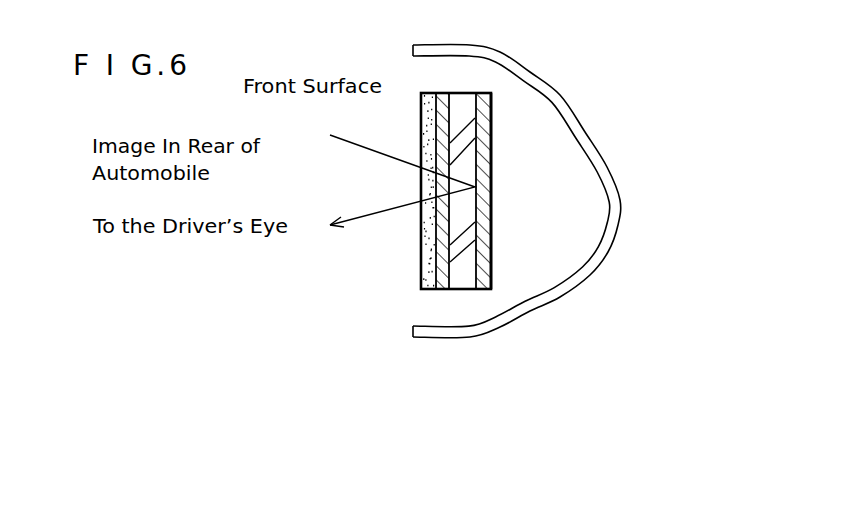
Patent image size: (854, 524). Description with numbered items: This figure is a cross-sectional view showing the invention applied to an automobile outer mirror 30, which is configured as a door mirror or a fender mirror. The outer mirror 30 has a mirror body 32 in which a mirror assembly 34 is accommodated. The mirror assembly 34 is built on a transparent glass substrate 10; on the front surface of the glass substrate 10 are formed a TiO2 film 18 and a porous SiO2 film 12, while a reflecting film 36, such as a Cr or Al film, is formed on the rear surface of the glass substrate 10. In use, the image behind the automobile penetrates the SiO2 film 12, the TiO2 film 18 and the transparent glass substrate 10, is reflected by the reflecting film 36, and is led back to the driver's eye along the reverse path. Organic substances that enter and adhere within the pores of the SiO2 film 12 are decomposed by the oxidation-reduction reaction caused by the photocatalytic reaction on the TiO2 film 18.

The automobile outer mirror 30 is at (610, 47).
The mirror body 32 is at (572, 100).
The transparent glass substrate 10 is at (554, 234).
The porous SiO2 film 12 is at (422, 289).
The TiO2 film 18 is at (437, 289).
The mirror assembly 34 is at (528, 230).
The reflecting film 36 is at (491, 275).